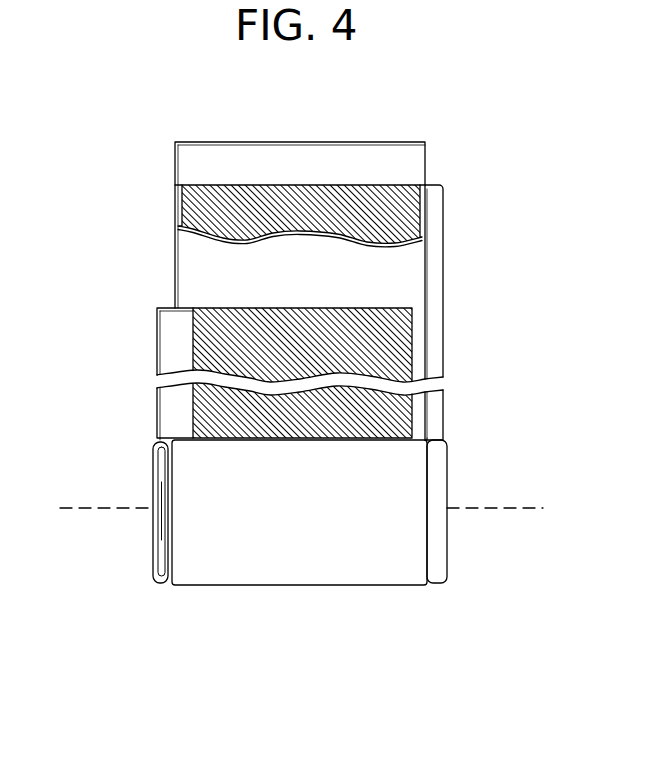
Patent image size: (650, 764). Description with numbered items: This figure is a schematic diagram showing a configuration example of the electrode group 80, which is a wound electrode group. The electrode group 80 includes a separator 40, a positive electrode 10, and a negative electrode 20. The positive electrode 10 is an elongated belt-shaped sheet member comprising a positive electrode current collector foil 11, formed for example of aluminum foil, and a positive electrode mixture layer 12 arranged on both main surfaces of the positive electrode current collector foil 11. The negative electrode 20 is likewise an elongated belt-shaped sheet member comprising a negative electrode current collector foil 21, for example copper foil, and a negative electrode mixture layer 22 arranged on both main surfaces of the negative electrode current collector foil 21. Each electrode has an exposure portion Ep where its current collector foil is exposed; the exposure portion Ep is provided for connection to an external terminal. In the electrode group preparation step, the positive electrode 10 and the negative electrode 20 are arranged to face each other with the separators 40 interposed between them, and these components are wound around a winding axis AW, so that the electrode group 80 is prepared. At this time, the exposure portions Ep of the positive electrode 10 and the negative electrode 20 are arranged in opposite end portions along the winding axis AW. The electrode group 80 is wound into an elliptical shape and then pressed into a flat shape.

The positive electrode 10 is at (253, 343).
The positive electrode current collector foil 11 is at (172, 308).
The positive electrode mixture layer 12 is at (213, 312).
The negative electrode 20 is at (362, 280).
The negative electrode current collector foil 21 is at (432, 186).
The negative electrode mixture layer 22 is at (395, 185).
The separator 40 is at (229, 143).
The electrode group 80 is at (425, 597).
The exposure portion Ep is at (430, 226).
The winding axis AW is at (497, 508).